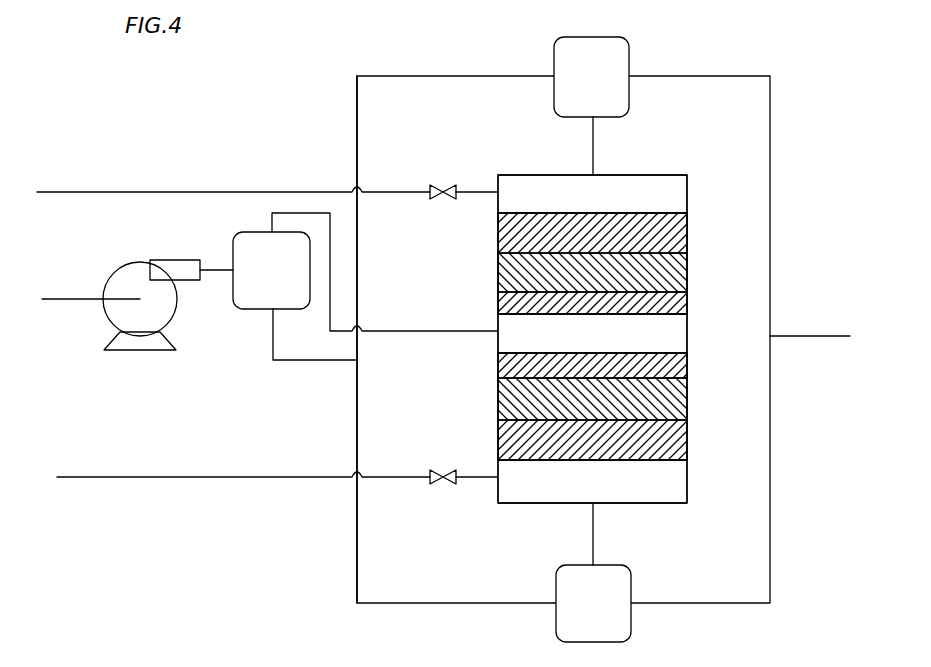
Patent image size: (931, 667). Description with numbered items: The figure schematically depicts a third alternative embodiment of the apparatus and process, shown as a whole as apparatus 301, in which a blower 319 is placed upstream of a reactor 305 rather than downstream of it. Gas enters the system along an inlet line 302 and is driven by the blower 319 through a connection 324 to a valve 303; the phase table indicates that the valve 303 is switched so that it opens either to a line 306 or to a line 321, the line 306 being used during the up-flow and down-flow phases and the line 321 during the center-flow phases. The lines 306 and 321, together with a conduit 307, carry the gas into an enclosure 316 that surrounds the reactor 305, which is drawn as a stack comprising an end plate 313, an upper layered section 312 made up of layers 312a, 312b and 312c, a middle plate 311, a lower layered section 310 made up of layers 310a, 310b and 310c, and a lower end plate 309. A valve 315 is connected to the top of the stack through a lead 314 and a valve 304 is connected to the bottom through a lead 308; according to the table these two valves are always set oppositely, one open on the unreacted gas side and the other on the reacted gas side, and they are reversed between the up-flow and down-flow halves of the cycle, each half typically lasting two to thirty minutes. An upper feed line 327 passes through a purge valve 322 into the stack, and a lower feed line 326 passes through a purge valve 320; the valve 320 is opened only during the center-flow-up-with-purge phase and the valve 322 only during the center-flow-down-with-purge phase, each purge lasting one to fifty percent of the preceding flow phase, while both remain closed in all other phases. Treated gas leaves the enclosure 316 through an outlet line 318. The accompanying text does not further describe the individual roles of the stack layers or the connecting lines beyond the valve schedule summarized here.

The electrochemical gas separation system 301 is at (260, 130).
The feed gas inlet line 302 is at (57, 302).
The valve 303 is at (246, 232).
The valve 304 is at (633, 597).
The reactor 305 is at (527, 503).
The line 306 is at (308, 362).
The enclosure conduit 307 is at (358, 148).
The electrical lead 308 is at (595, 532).
The lower end plate 309 is at (676, 485).
The lower electrode assembly 310 is at (676, 400).
The lower electrode layer 310a is at (498, 440).
The lower electrolyte layer 310b is at (498, 399).
The lower electrode layer 310c is at (498, 366).
The separator plate 311 is at (676, 337).
The upper electrode assembly 312 is at (676, 272).
The upper electrode layer 312a is at (498, 233).
The upper electrolyte layer 312b is at (498, 272).
The upper electrode layer 312c is at (498, 303).
The upper end plate 313 is at (676, 197).
The electrical lead 314 is at (593, 145).
The valve 315 is at (631, 64).
The enclosure 316 is at (770, 206).
The outlet line 318 is at (797, 338).
The blower 319 is at (148, 263).
The valve 320 is at (437, 487).
The line 321 is at (300, 213).
The valve 322 is at (447, 185).
The connecting line 324 is at (210, 275).
The lower inlet line 326 is at (163, 480).
The upper inlet line 327 is at (113, 190).